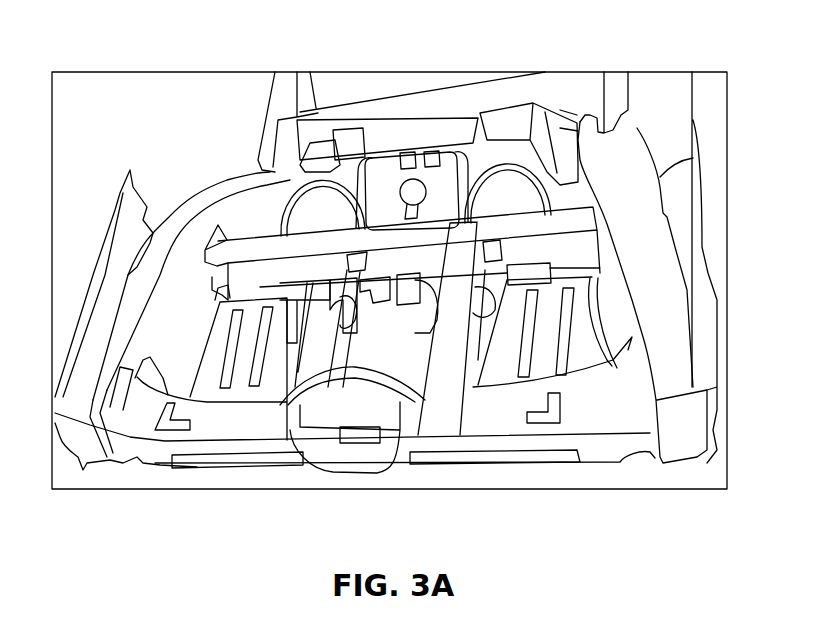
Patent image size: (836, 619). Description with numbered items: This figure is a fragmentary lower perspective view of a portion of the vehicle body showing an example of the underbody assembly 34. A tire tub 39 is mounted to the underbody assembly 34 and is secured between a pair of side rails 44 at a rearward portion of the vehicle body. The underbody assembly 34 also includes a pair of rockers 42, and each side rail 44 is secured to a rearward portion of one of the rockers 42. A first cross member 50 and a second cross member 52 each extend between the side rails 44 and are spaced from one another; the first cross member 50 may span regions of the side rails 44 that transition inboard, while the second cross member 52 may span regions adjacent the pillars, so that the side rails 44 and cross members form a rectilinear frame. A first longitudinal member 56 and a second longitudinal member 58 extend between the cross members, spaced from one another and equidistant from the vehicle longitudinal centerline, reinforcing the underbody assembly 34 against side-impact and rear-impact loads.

The underbody assembly 34 is at (389, 280).
The tire tub 39 is at (345, 85).
The rockers 42 is at (127, 251).
The side rails 44 is at (93, 361).
The first cross member 50 is at (258, 250).
The second cross member 52 is at (203, 423).
The first longitudinal member 56 is at (298, 372).
The second longitudinal member 58 is at (450, 370).